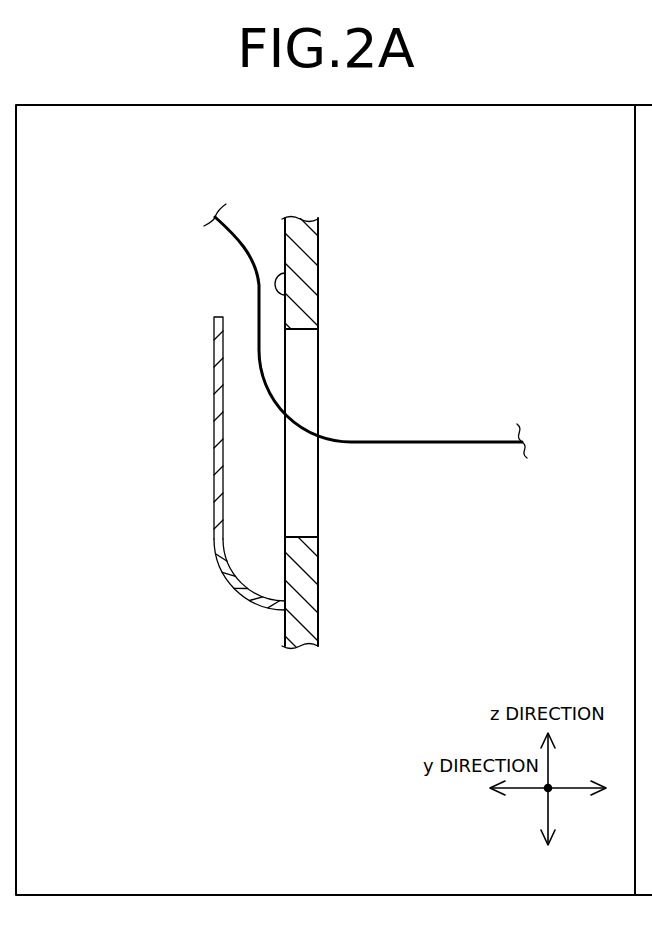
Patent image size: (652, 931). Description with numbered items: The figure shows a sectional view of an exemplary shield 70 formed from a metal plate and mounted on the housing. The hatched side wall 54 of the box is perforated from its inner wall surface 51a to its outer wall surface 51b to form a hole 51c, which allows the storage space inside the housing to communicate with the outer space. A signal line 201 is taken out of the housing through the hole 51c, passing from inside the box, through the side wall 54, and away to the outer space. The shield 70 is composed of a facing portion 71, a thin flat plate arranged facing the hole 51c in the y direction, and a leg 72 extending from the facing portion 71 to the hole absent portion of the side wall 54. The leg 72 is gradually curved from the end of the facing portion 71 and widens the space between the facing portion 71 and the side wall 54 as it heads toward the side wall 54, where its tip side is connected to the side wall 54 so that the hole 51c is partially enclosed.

The side wall 54 is at (341, 436).
The inner wall surface 51a is at (276, 295).
The outer wall surface 51b is at (318, 253).
The hole 51c is at (307, 527).
The shield 70 is at (196, 463).
The facing portion 71 is at (214, 493).
The leg 72 is at (223, 574).
The signal line 201 is at (483, 440).